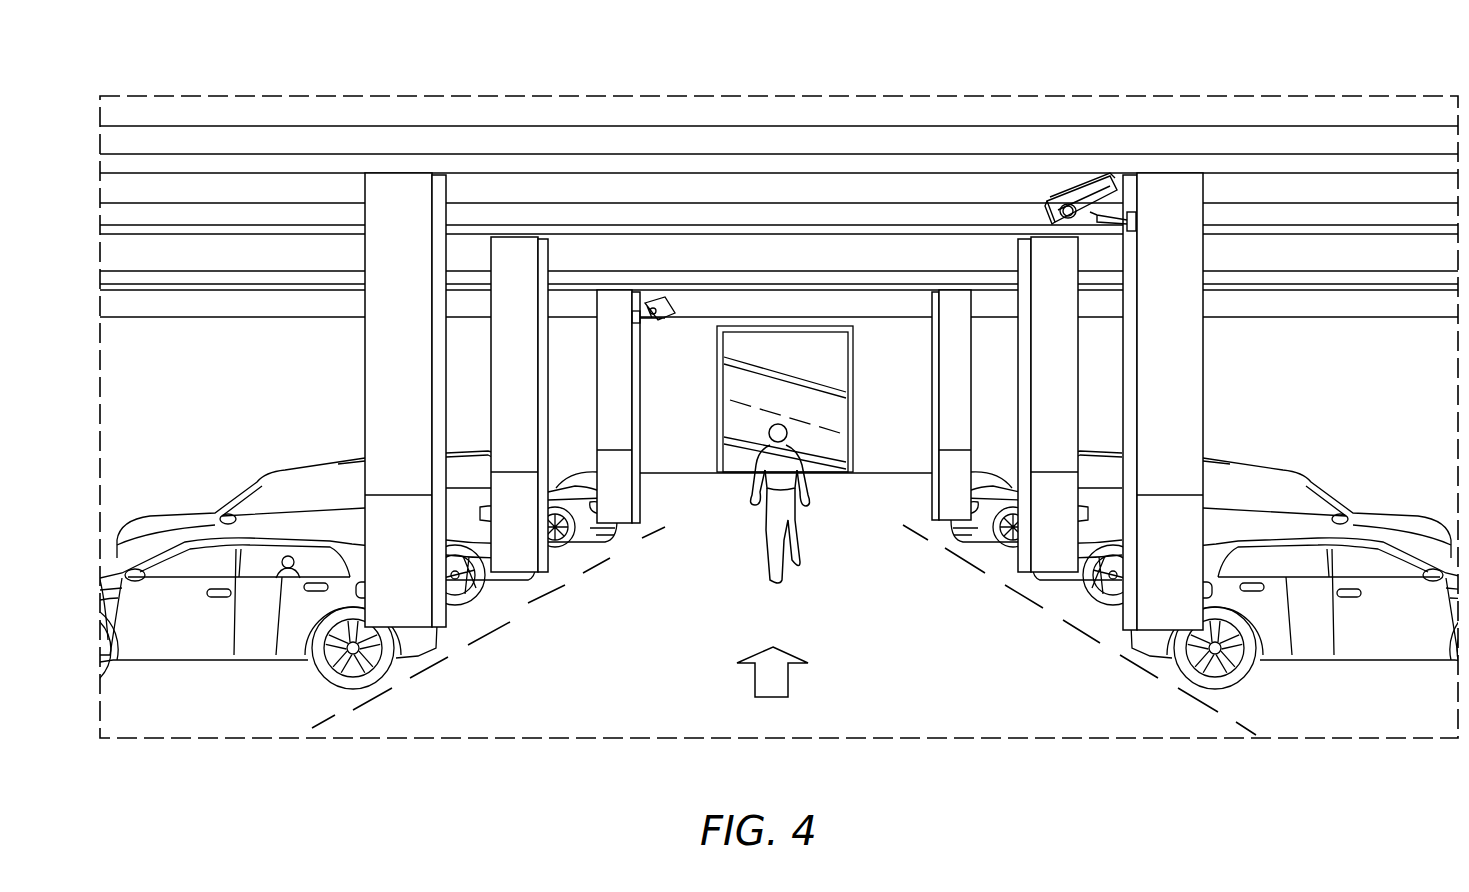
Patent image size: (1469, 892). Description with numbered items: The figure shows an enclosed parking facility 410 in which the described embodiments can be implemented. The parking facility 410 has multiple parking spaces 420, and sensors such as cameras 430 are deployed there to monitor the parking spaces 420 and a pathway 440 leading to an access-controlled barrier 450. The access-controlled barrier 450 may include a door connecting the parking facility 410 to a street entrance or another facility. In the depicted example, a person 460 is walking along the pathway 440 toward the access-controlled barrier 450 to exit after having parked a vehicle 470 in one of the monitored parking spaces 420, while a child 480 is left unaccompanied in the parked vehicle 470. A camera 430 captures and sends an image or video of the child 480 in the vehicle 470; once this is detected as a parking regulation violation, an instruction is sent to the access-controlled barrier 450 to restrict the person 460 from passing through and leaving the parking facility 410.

The enclosed parking facility 410 is at (573, 95).
The parking spaces 420 is at (330, 703).
The cameras 430 is at (1068, 183).
The pathway 440 is at (805, 657).
The access-controlled barrier 450 is at (785, 397).
The person 460 is at (780, 503).
The vehicle 470 is at (233, 628).
The child 480 is at (288, 580).